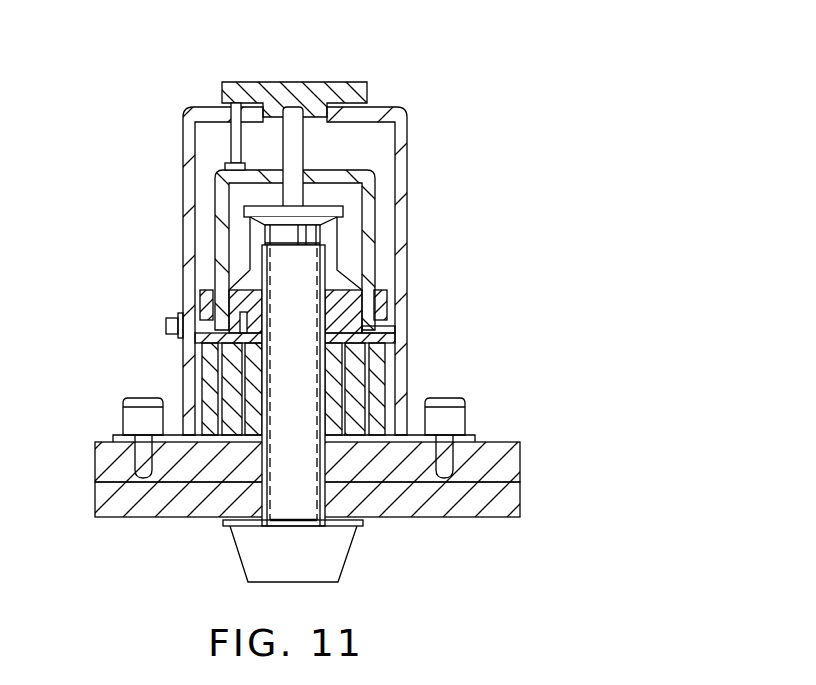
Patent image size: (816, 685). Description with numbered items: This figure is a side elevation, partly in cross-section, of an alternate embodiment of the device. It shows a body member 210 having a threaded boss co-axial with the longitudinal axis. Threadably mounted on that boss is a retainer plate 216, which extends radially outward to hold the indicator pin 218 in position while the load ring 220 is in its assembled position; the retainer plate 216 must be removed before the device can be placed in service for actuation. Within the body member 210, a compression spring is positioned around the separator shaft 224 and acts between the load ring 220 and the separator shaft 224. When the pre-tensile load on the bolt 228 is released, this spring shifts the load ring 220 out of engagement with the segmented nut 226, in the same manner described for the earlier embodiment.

The body member 210 is at (406, 198).
The retainer plate 216 is at (343, 82).
The indicator pin 218 is at (230, 152).
The load ring 220 is at (217, 270).
The separator shaft 224 is at (305, 146).
The segmented nut 226 is at (328, 258).
The bolt 228 is at (353, 526).